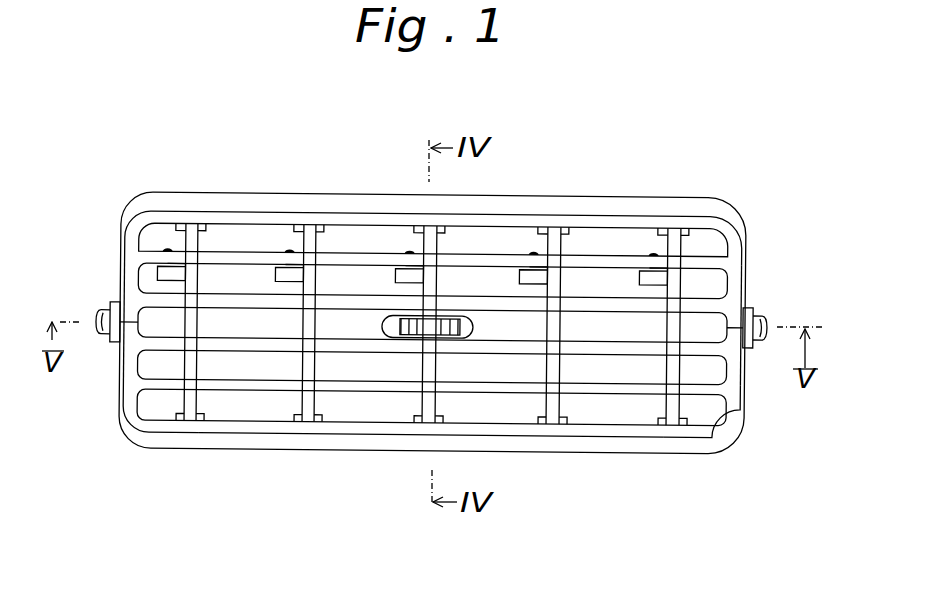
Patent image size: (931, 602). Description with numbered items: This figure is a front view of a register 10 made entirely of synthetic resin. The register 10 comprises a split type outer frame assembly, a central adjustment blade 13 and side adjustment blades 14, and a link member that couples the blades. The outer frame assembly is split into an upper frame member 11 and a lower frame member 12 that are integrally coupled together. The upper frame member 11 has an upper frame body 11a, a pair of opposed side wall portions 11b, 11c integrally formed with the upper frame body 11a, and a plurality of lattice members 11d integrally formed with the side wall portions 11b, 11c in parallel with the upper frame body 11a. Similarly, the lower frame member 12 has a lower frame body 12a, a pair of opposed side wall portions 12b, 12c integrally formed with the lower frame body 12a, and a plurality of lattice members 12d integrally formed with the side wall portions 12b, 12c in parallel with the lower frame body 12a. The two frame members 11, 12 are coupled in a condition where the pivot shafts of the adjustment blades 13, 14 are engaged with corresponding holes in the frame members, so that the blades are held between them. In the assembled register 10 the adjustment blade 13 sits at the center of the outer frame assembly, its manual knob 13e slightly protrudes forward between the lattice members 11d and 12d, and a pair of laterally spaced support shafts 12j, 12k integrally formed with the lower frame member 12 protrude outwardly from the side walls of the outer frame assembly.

The register 10 is at (430, 316).
The upper frame member 11 is at (433, 248).
The upper frame body 11a is at (480, 208).
The side wall portion 11b is at (127, 252).
The side wall portion 11c is at (732, 263).
The lattice members 11d is at (222, 300).
The lower frame member 12 is at (426, 435).
The lower frame body 12a is at (513, 442).
The side wall portion 12b is at (125, 385).
The side wall portion 12c is at (737, 377).
The lattice members 12d is at (268, 343).
The support shaft 12j is at (97, 320).
The support shaft 12k is at (767, 320).
The central adjustment blade 13 is at (433, 251).
The manual knob 13e is at (475, 326).
The side adjustment blades 14 is at (318, 247).